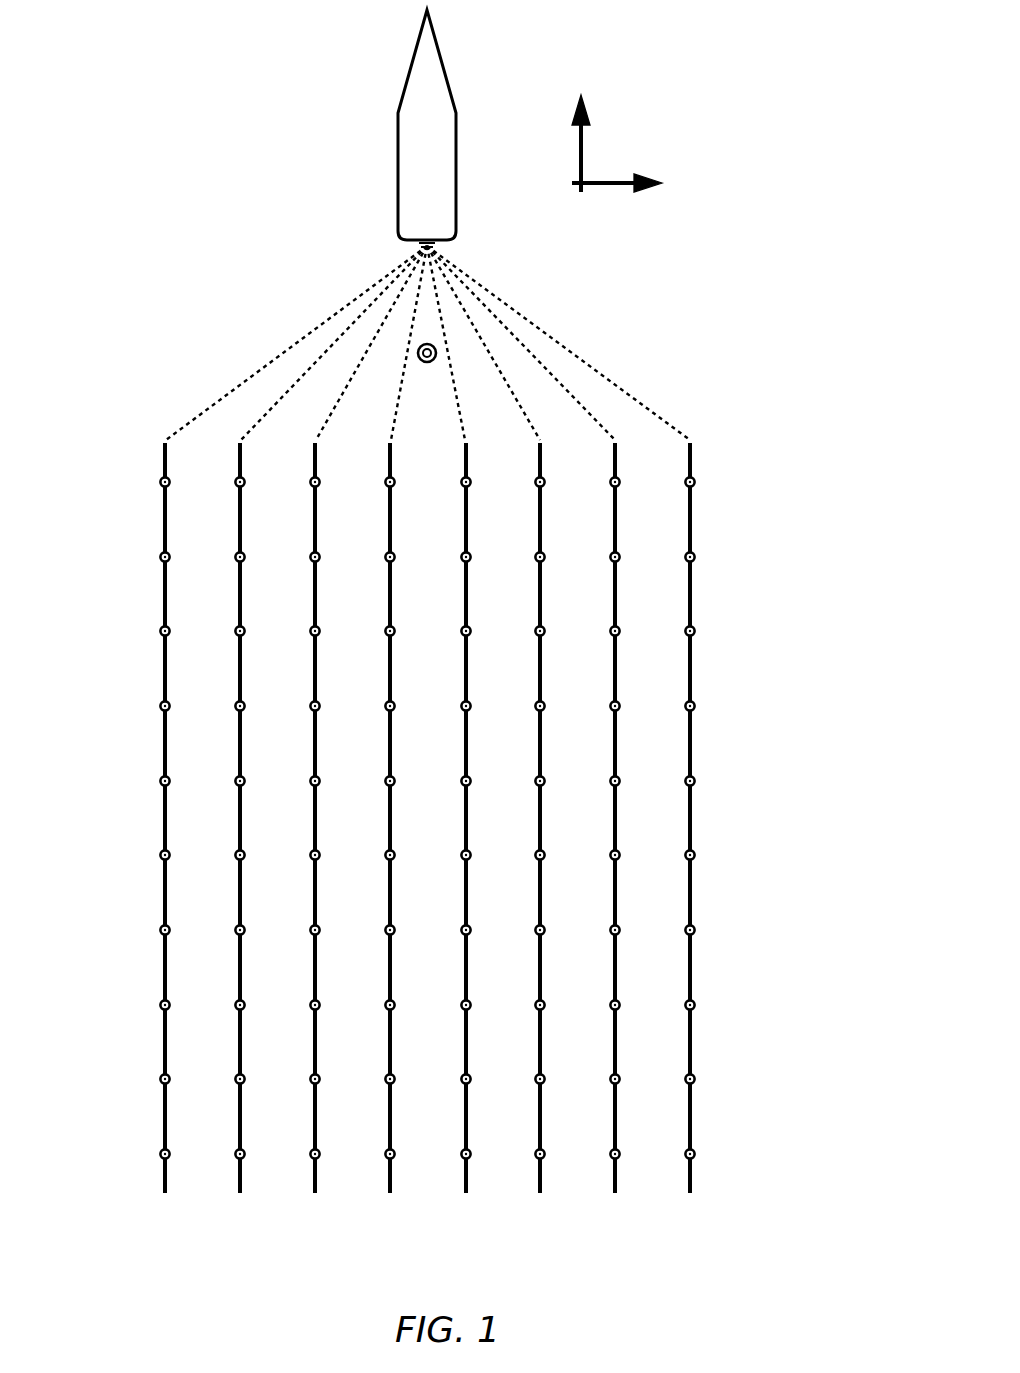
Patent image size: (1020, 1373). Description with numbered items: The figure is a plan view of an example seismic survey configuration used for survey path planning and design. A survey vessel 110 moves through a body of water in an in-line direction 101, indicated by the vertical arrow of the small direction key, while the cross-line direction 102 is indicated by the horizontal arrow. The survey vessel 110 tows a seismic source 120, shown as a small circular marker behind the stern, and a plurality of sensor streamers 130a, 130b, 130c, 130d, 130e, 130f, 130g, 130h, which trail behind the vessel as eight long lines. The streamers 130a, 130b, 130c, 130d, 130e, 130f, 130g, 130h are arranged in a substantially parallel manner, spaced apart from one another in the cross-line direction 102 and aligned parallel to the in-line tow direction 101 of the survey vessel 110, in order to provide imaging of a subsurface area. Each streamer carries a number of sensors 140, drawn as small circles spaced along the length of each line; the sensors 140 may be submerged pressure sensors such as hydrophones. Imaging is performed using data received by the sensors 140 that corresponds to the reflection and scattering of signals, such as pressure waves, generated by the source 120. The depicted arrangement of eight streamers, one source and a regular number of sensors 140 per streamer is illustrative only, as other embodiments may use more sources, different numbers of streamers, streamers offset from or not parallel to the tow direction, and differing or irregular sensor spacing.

The survey vessel 110 is at (435, 30).
The in-line direction 101 is at (581, 132).
The cross-line direction 102 is at (639, 186).
The source 120 is at (417, 341).
The sensor streamer 130a is at (163, 1178).
The sensor streamer 130b is at (237, 1173).
The sensor streamer 130c is at (311, 1187).
The sensor streamer 130d is at (387, 1180).
The sensor streamer 130e is at (463, 1188).
The sensor streamer 130f is at (537, 1180).
The sensor streamer 130g is at (613, 1192).
The sensor streamer 130h is at (688, 1187).
The sensor 140 is at (163, 480).